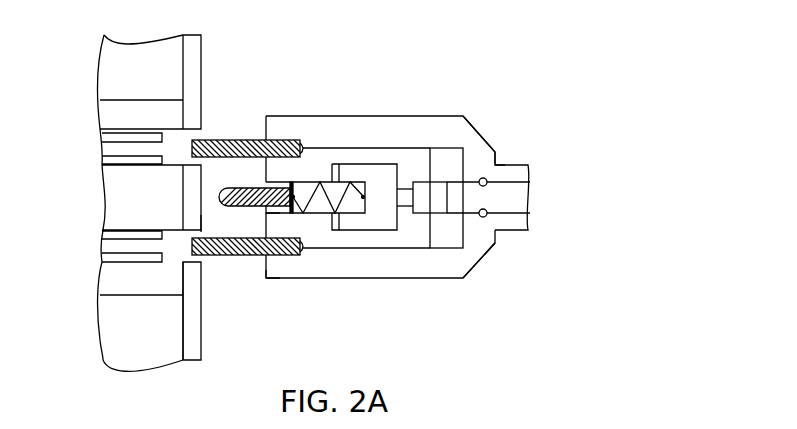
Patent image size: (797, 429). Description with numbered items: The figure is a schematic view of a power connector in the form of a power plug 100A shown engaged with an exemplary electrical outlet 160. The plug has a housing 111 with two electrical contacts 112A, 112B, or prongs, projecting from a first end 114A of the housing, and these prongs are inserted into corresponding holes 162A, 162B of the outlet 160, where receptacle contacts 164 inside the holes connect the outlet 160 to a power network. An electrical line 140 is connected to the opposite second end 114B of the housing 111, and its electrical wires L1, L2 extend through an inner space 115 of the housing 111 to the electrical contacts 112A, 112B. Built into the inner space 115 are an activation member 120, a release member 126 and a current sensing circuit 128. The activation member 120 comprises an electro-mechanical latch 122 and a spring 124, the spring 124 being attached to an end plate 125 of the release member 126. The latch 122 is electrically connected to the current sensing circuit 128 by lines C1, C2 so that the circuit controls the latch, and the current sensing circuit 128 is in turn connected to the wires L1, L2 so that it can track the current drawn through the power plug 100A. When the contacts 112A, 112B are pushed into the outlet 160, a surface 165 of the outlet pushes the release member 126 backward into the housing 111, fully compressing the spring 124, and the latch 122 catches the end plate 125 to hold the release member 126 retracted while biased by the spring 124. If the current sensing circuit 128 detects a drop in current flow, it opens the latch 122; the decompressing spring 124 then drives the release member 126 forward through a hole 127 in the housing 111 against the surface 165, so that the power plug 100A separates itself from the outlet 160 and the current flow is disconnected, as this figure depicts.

The power plug 100A is at (529, 59).
The housing 111 is at (463, 117).
The electrical contact 112A is at (210, 139).
The electrical contact 112B is at (217, 257).
The first end of the housing 114A is at (274, 292).
The second end of the housing 114B is at (505, 264).
The inner space 115 is at (407, 156).
The activation member 120 is at (360, 223).
The electro-mechanical latch 122 is at (341, 164).
The spring 124 is at (330, 181).
The end plate 125 is at (310, 181).
The release member 126 is at (260, 183).
The hole 127 is at (271, 214).
The current sensing circuit 128 is at (447, 213).
The electrical line 140 is at (508, 165).
The electrical outlet 160 is at (202, 52).
The hole 162A is at (175, 146).
The hole 162B is at (173, 247).
The receptacle contacts 164 is at (117, 162).
The surface of the outlet 165 is at (205, 224).
The line C1 is at (404, 189).
The line C2 is at (403, 207).
The electrical wire L1 is at (450, 144).
The electrical wire L2 is at (463, 232).